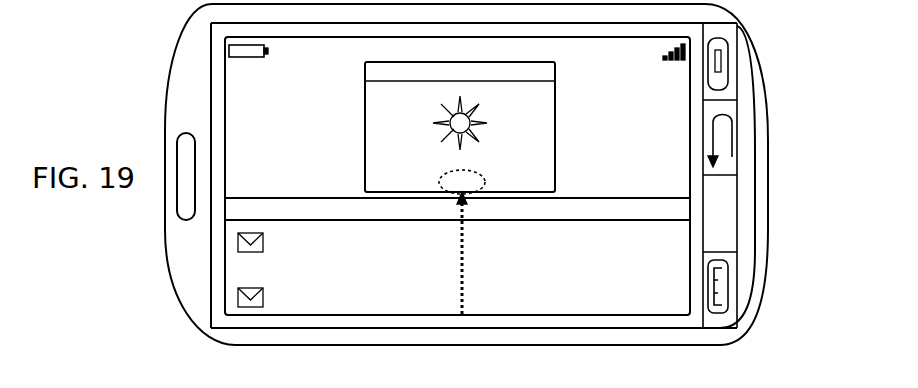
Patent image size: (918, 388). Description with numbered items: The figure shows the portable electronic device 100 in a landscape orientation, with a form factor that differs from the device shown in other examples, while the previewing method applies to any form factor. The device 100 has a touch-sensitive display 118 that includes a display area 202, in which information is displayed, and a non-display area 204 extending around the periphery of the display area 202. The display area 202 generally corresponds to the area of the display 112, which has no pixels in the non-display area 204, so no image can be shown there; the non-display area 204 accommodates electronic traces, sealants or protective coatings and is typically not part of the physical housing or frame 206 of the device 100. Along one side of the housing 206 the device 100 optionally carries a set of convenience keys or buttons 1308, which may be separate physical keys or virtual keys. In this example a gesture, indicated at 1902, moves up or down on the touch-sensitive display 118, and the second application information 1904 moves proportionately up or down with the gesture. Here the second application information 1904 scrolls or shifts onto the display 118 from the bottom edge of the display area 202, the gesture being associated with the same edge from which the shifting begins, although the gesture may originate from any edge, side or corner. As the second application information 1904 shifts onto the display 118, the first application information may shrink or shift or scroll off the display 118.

The portable electronic device 100 is at (798, 27).
The display 112 is at (232, 308).
The touch-sensitive display 118 is at (612, 310).
The display area 202 is at (285, 308).
The non-display area 204 is at (385, 322).
The housing or frame 206 is at (768, 223).
The convenience key or button 1308 is at (720, 330).
The dashed pointer indicator 1902 is at (463, 288).
The second application information 1904 is at (673, 205).